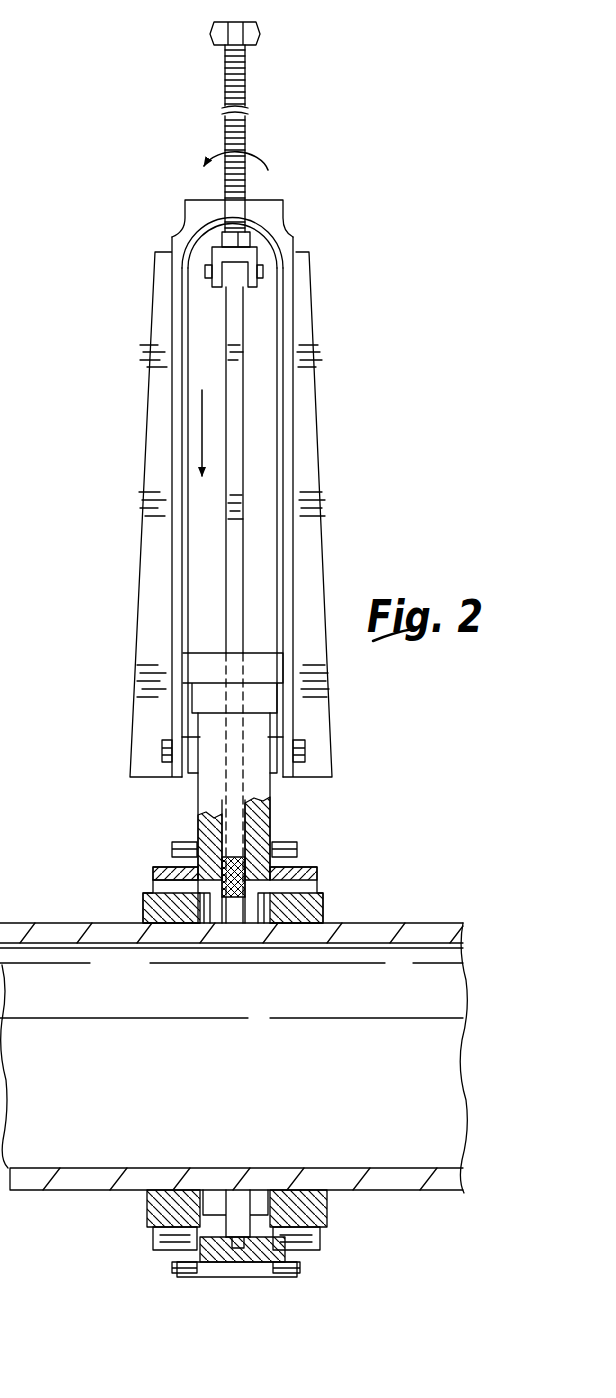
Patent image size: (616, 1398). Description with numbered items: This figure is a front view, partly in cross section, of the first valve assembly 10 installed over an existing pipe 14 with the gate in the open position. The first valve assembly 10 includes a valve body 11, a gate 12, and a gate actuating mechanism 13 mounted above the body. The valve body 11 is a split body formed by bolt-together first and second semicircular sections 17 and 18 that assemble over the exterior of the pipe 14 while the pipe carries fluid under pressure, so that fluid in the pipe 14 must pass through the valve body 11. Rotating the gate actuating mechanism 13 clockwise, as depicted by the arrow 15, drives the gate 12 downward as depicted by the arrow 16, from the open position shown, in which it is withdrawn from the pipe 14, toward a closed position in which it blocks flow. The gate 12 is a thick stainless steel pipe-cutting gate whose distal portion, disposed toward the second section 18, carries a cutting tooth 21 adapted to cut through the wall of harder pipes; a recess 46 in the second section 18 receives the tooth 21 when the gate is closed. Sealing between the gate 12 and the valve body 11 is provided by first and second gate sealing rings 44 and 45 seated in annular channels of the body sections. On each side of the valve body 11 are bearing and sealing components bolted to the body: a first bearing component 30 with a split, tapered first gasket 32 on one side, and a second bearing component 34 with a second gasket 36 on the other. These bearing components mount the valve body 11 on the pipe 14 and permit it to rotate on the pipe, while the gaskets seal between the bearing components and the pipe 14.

The first valve assembly 10 is at (362, 242).
The valve body 11 is at (196, 826).
The gate 12 is at (233, 823).
The gate actuating mechanism 13 is at (217, 131).
The pipe 14 is at (66, 920).
The arrow 15 is at (268, 150).
The arrow 16 is at (202, 417).
The first semicircular section 17 is at (273, 828).
The second semicircular section 18 is at (243, 1275).
The cutting tooth 21 is at (230, 903).
The first bearing component 30 is at (153, 1235).
The first gasket 32 is at (147, 1205).
The second bearing component 34 is at (320, 1238).
The second gasket 36 is at (323, 1208).
The first gate sealing ring 44 is at (173, 1262).
The second gate sealing ring 45 is at (297, 1275).
The recess 46 is at (237, 1242).